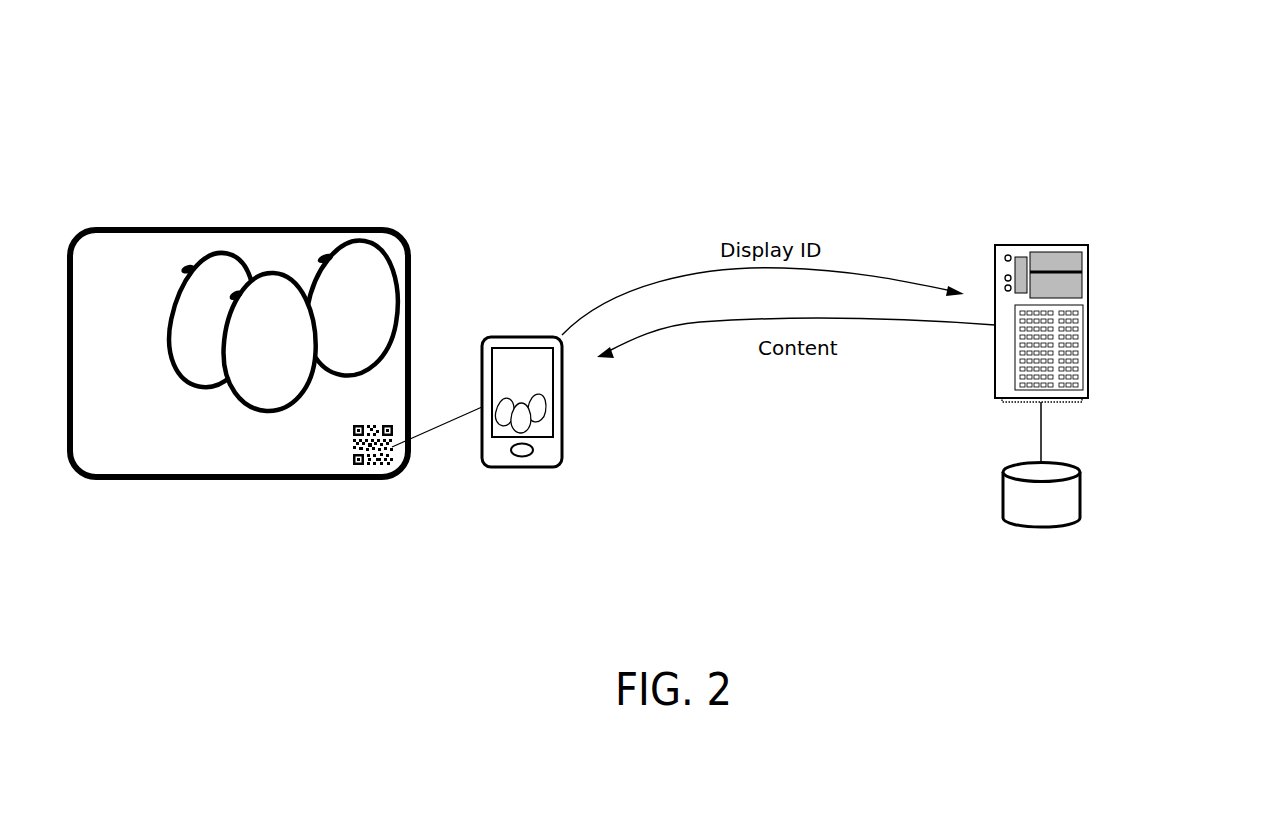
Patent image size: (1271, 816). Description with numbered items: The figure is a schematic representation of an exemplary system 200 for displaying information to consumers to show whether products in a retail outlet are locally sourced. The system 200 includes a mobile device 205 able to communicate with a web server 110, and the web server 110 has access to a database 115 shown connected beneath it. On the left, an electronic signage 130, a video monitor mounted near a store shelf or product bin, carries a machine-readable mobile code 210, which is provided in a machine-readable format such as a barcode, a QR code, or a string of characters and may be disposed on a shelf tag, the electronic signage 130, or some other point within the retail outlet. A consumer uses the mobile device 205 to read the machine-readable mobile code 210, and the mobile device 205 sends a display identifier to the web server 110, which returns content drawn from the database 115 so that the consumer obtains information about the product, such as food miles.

The system 200 is at (1128, 84).
The electronic signage 130 is at (333, 230).
The machine-readable mobile code 210 is at (350, 458).
The mobile device 205 is at (563, 435).
The web server 110 is at (1068, 243).
The database 115 is at (1060, 522).